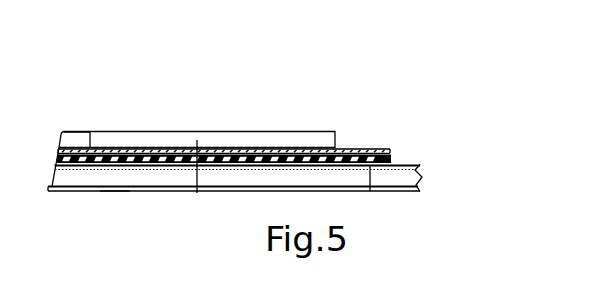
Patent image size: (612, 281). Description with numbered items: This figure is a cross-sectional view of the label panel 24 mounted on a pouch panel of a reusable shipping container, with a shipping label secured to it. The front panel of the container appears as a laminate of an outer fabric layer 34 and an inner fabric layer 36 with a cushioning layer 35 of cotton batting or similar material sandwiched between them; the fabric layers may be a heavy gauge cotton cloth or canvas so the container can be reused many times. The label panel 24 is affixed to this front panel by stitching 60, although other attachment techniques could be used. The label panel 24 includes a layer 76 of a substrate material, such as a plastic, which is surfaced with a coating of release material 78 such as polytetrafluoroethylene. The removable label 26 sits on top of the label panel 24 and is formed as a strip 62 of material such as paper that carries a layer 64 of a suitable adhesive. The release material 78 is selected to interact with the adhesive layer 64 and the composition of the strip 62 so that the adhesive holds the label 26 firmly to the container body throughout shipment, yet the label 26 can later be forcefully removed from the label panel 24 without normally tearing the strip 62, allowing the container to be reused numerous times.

The label panel 24 is at (351, 136).
The removable label 26 is at (162, 126).
The fabric layer 34 is at (197, 193).
The cushioning layer 35 is at (160, 178).
The fabric layer 36 is at (112, 191).
The stitching 60 is at (372, 177).
The strip 62 is at (90, 141).
The adhesive layer 64 is at (197, 140).
The substrate layer 76 is at (375, 155).
The release material 78 is at (363, 152).